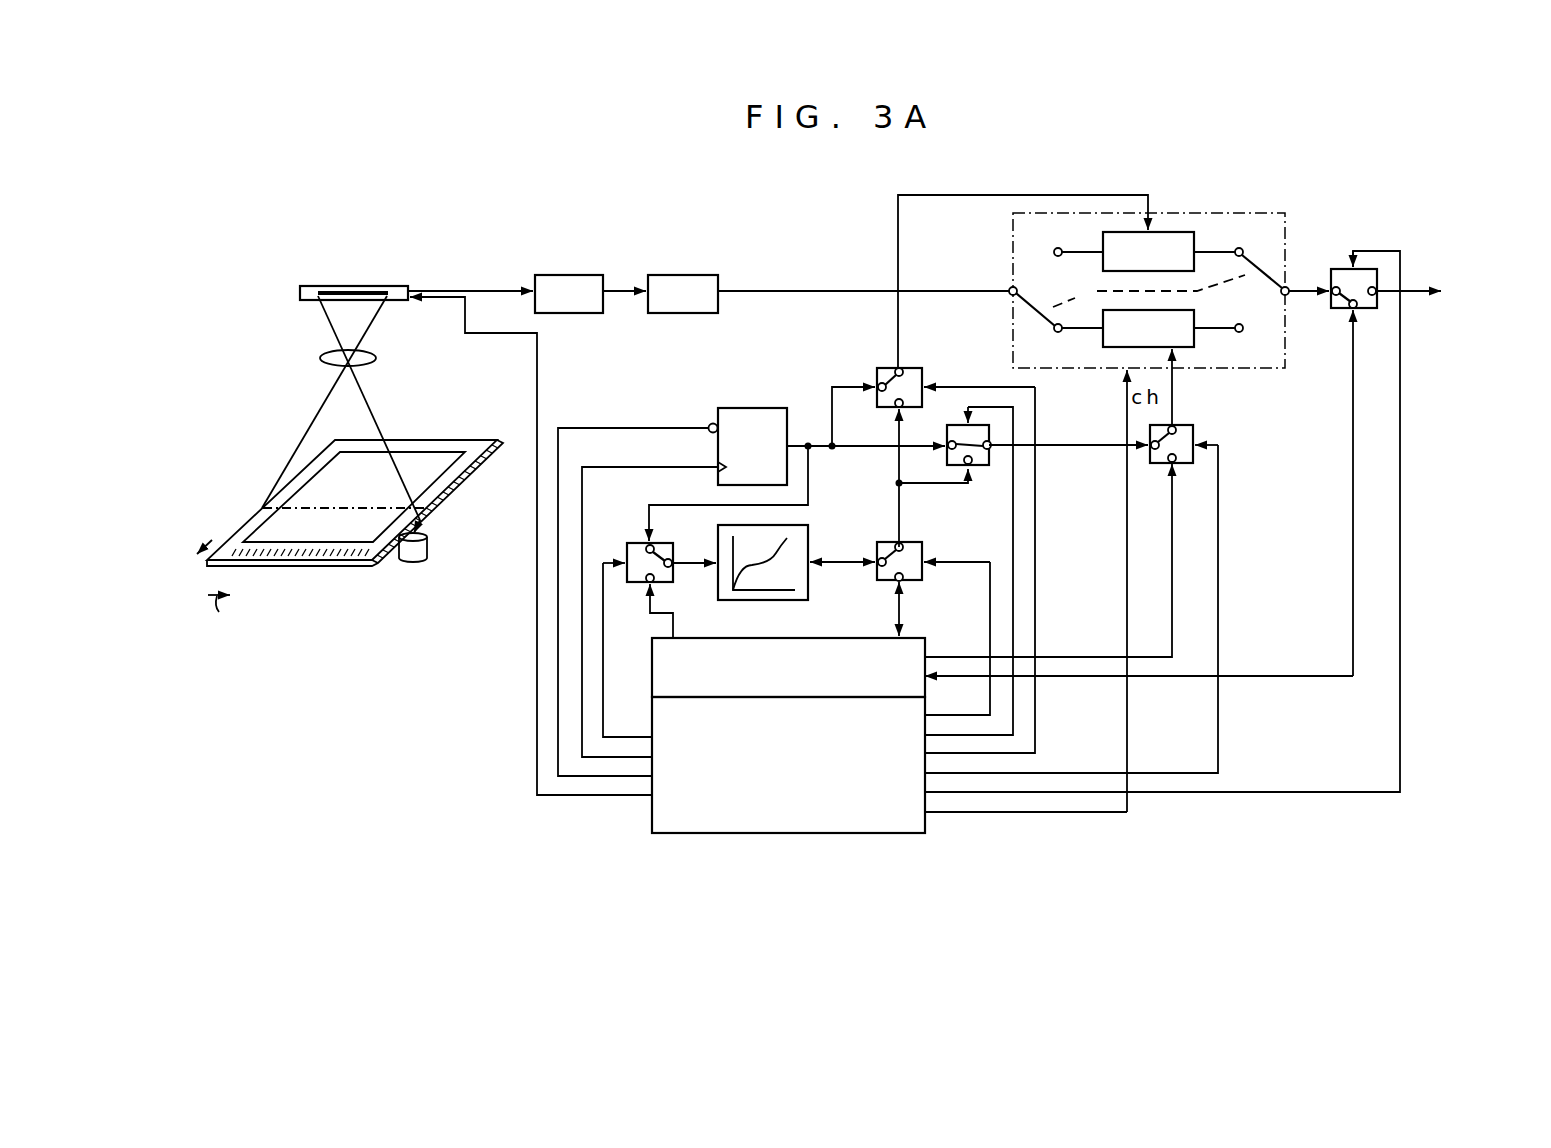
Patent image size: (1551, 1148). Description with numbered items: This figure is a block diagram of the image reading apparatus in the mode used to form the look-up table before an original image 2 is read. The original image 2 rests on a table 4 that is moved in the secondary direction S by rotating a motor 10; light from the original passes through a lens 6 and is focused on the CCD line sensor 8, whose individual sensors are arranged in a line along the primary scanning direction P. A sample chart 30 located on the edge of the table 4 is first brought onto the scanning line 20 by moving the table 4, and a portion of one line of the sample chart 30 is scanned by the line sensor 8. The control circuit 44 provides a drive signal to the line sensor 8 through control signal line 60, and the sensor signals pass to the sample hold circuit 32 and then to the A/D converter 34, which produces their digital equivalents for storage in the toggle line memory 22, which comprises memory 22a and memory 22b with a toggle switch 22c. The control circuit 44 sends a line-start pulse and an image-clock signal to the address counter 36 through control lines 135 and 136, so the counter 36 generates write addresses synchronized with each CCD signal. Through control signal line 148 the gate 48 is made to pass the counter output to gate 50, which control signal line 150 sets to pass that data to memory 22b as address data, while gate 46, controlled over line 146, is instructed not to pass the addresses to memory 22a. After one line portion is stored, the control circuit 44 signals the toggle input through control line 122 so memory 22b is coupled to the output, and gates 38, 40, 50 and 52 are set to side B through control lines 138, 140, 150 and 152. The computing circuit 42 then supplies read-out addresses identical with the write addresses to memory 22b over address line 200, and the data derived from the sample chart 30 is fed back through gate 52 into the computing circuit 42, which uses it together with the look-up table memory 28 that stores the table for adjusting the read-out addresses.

The original image 2 is at (262, 536).
The table 4 is at (250, 518).
The lens 6 is at (326, 362).
The CCD line sensor 8 is at (341, 285).
The motor 10 is at (413, 561).
The scanning line 20 is at (343, 511).
The sample chart 30 is at (262, 551).
The toggle line memory 22 is at (1179, 290).
The memory 22a is at (1183, 243).
The memory 22b is at (1194, 346).
The memory changeover switch 22c is at (1030, 297).
The memory for storing the look-up table 28 is at (785, 524).
The sample hold circuit 32 is at (565, 275).
The A/D converter 34 is at (683, 275).
The address counter 36 is at (745, 408).
The gate 38 is at (676, 586).
The gate 40 is at (923, 580).
The computing circuit 42 is at (843, 640).
The control circuit 44 is at (825, 828).
The gate 46 is at (922, 368).
The gate 48 is at (947, 462).
The gate 50 is at (1195, 425).
The gate 52 is at (1323, 313).
The control signal line 60 is at (525, 685).
The control line 122 is at (1016, 818).
The control line 135 is at (590, 425).
The control line 136 is at (645, 462).
The control line 138 is at (611, 582).
The control line 140 is at (980, 627).
The switch control signal line 146 is at (1043, 552).
The control signal line 148 is at (1010, 520).
The control signal line 150 is at (1227, 560).
The control line 152 is at (1406, 462).
The address line 200 is at (1150, 660).
The secondary direction S is at (208, 540).
The primary scanning direction P is at (218, 621).